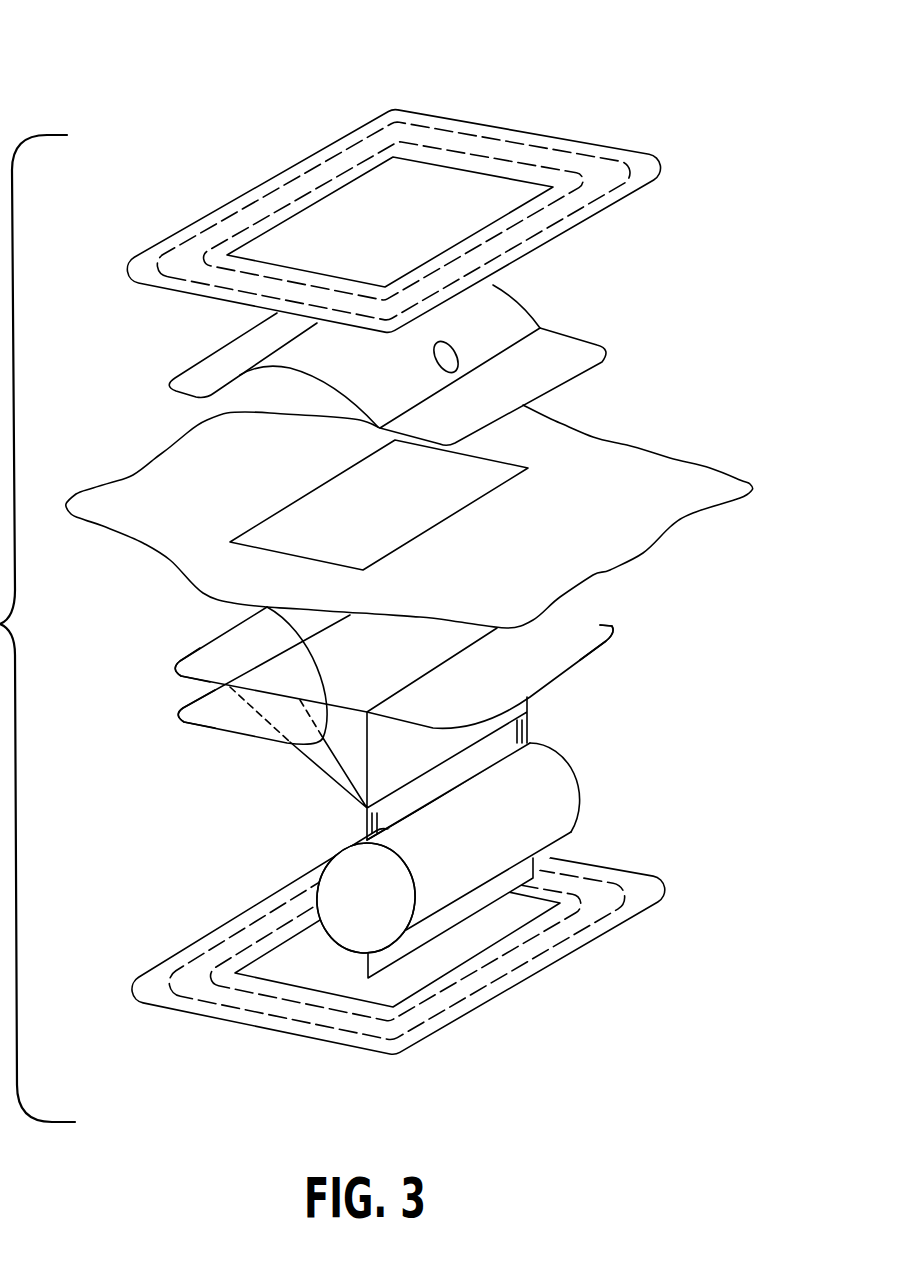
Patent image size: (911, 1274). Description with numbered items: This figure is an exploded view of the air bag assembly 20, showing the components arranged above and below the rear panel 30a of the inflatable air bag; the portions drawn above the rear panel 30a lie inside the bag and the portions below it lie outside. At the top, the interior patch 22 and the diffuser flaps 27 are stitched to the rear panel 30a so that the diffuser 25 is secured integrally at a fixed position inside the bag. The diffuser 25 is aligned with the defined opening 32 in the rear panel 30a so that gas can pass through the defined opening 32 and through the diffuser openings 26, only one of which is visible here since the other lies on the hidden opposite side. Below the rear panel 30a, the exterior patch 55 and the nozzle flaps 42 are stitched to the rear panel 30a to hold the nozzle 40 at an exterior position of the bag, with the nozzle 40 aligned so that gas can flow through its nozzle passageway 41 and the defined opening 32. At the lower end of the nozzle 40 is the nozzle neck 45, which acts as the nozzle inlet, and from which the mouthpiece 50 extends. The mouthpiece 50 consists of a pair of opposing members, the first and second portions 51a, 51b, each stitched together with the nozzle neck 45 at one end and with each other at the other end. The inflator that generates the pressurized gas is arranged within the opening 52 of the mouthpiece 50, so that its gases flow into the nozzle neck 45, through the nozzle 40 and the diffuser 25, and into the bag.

The air bag assembly 20 is at (149, 98).
The interior patch 22 is at (655, 156).
The diffuser 25 is at (512, 333).
The diffuser opening 26 is at (456, 350).
The diffuser flaps 27 is at (182, 364).
The rear panel 30a is at (692, 489).
The defined opening 32 is at (422, 538).
The nozzle 40 is at (331, 779).
The nozzle passageway 41 is at (362, 682).
The nozzle flaps 42 is at (200, 647).
The nozzle neck 45 is at (530, 732).
The mouthpiece 50 is at (546, 786).
The first portion 51a is at (580, 803).
The second portion 51b is at (335, 856).
The opening 52 is at (362, 915).
The exterior patch 55 is at (666, 897).